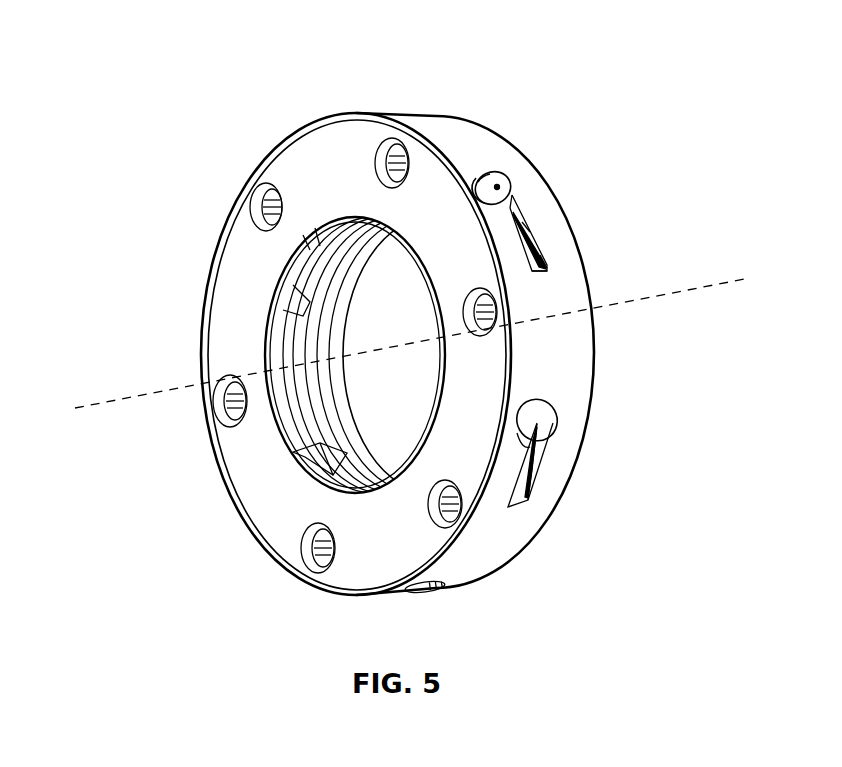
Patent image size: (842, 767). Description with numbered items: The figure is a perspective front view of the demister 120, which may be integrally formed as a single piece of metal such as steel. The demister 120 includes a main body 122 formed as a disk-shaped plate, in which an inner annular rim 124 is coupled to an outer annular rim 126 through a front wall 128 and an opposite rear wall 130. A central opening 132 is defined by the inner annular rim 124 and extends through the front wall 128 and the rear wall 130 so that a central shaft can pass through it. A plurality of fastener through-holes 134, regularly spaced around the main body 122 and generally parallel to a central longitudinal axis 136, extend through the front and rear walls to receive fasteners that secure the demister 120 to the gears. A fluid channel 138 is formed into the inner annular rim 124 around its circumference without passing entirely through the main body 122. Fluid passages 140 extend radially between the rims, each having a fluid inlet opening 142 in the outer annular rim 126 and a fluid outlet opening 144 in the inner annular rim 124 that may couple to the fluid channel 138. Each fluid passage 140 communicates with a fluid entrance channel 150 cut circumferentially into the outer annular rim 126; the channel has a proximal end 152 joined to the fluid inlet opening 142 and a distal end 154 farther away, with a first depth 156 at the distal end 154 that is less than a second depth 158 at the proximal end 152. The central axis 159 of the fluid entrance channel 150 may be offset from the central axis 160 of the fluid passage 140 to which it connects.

The demister 120 is at (125, 112).
The main body 122 is at (596, 343).
The inner annular rim 124 is at (340, 259).
The outer annular rim 126 is at (510, 180).
The front wall 128 is at (300, 145).
The rear wall 130 is at (585, 265).
The central opening 132 is at (373, 415).
The fastener through-holes 134 is at (380, 150).
The central longitudinal axis 136 is at (133, 392).
The fluid channel 138 is at (312, 390).
The fluid passages 140 is at (511, 188).
The fluid inlet opening 142 is at (510, 191).
The fluid outlet opening 144 is at (322, 302).
The fluid entrance channel 150 is at (508, 222).
The proximal end 152 is at (512, 210).
The distal end 154 is at (547, 263).
The first depth 156 is at (545, 284).
The second depth 158 is at (494, 186).
The central axis of the fluid entrance channel 159 is at (528, 228).
The central axis of the fluid passage 160 is at (497, 186).